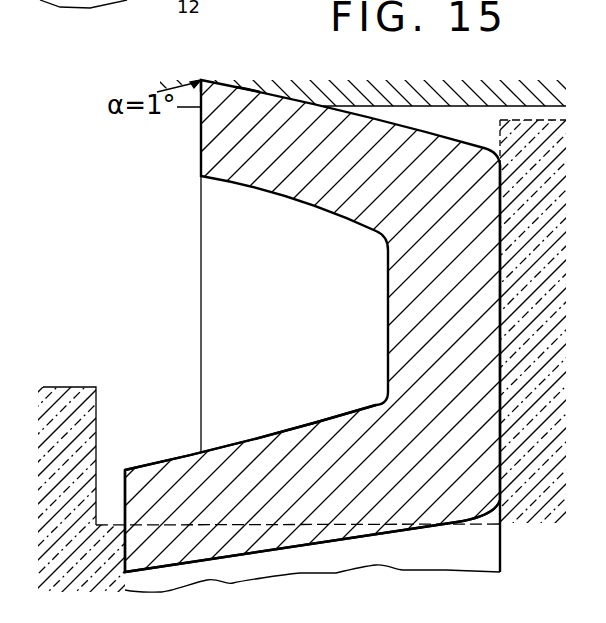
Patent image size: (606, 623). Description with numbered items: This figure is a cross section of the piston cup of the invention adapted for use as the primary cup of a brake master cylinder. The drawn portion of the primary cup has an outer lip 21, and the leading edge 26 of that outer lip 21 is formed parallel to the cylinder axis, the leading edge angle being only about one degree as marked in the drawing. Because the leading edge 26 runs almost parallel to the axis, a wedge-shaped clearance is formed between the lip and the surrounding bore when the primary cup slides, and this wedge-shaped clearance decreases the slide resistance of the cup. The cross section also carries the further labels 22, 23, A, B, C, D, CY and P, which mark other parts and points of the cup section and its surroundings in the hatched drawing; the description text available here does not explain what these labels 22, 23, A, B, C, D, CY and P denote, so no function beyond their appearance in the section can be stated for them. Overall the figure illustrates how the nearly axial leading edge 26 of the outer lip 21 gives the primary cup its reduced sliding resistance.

The leading edge 26 is at (227, 80).
The outer lip 21 is at (360, 123).
The lower portion of piston ring 22 is at (440, 483).
The outer peripheral face of piston ring 23 is at (491, 300).
The contact point A is at (248, 86).
The upper corner B is at (200, 80).
The corner C of ring groove C is at (500, 153).
The corner D is at (200, 178).
The cylinder CY is at (496, 100).
The piston P is at (506, 343).